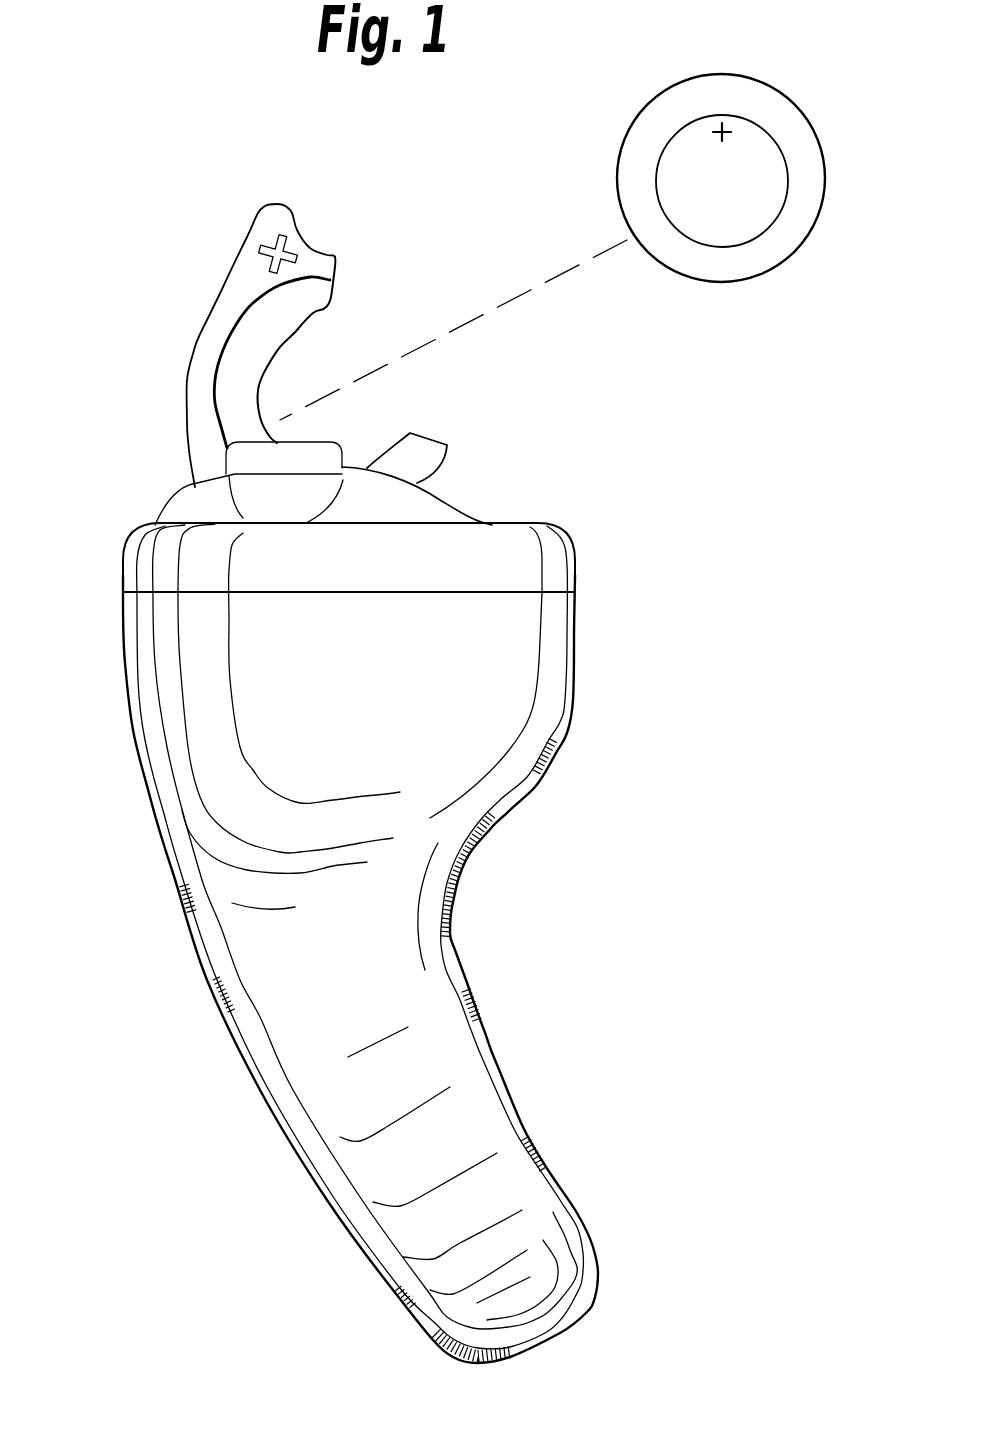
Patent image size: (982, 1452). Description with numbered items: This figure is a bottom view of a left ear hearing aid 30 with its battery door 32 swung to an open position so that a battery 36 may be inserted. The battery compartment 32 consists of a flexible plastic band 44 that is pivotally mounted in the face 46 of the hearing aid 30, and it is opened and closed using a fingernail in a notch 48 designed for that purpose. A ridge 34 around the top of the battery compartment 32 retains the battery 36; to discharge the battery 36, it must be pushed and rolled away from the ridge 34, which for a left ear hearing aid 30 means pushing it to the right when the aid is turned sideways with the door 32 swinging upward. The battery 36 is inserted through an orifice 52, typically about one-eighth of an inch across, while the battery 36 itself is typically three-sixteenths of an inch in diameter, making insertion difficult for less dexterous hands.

The left ear hearing aid 30 is at (593, 778).
The battery door 32 is at (180, 323).
The ridge 34 is at (278, 337).
The battery 36 is at (828, 132).
The flexible plastic band 44 is at (230, 263).
The face 46 is at (449, 474).
The notch 48 is at (313, 230).
The orifice 52 is at (393, 330).